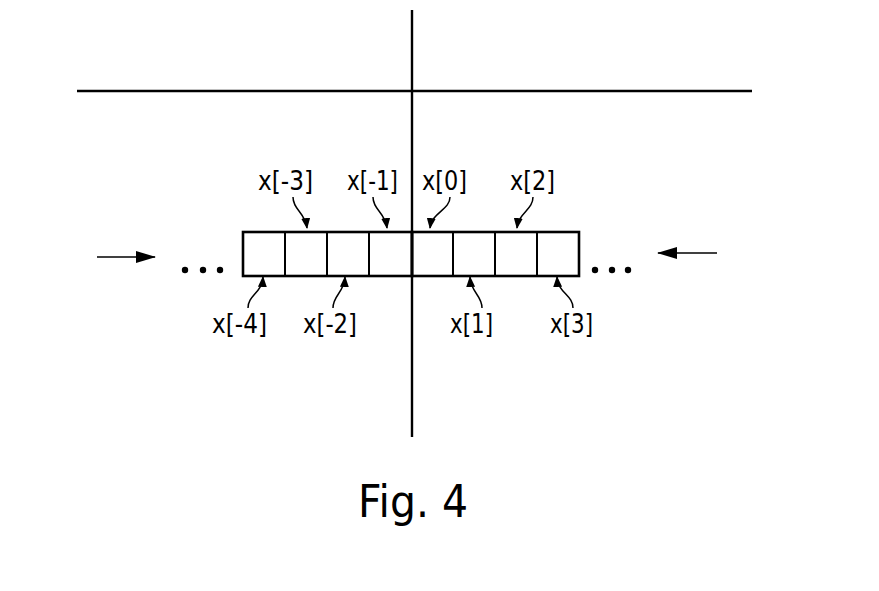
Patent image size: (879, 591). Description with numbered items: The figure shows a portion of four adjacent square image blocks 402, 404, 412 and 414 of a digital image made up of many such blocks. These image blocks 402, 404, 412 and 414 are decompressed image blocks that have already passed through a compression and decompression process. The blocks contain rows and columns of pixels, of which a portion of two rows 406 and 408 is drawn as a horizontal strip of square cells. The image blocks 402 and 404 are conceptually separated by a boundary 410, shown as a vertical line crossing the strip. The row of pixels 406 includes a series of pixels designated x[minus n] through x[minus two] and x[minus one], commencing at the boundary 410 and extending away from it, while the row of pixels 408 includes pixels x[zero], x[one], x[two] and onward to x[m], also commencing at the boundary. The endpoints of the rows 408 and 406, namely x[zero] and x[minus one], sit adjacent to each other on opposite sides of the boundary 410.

The image block 402 is at (195, 401).
The image block 404 is at (622, 403).
The row of pixels 406 is at (95, 259).
The row of pixels 408 is at (715, 254).
The boundary 410 is at (413, 395).
The image block 412 is at (542, 52).
The image block 414 is at (282, 52).